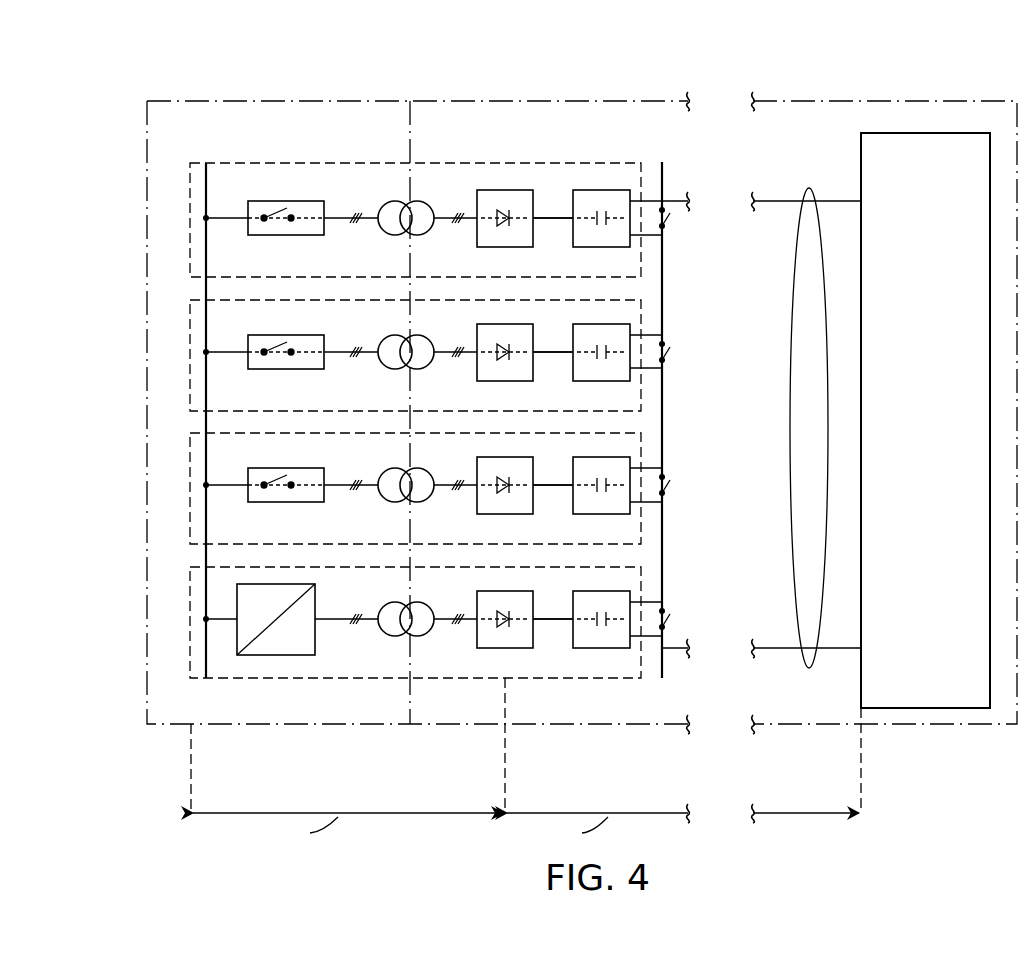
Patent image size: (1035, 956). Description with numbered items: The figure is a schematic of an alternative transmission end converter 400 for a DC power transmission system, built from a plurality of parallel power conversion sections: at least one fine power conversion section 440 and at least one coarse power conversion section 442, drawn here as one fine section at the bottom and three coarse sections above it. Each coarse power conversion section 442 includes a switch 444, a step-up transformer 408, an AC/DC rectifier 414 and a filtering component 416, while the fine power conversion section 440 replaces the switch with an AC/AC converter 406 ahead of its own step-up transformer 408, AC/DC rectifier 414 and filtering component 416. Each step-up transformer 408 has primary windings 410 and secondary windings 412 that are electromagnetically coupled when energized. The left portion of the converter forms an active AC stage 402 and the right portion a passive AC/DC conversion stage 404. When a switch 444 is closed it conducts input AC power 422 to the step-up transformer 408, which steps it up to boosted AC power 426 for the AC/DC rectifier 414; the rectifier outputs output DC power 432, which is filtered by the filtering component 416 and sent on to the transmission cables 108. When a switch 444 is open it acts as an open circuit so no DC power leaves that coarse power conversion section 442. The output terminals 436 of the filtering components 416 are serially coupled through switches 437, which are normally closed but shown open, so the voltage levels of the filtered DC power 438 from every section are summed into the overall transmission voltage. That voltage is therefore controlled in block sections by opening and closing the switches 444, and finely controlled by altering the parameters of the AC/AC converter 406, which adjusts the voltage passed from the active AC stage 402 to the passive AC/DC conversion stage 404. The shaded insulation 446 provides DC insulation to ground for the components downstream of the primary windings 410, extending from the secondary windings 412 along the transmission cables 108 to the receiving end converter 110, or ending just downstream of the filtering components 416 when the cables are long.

The transmission end converter 400 is at (710, 75).
The active AC stage 402 is at (401, 748).
The passive AC/DC conversion stage 404 is at (588, 748).
The AC/AC converter 406 is at (275, 656).
The step-up transformer 408 is at (382, 417).
The primary windings 410 is at (388, 230).
The secondary windings 412 is at (410, 237).
The AC/DC rectifier 414 is at (490, 190).
The filtering component 416 is at (598, 190).
The input AC power 422 is at (343, 213).
The boosted AC power 426 is at (440, 212).
The output DC power 432 is at (552, 212).
The output terminals 436 is at (646, 198).
The switches 437 is at (668, 220).
The filtered DC power 438 is at (658, 200).
The fine power conversion section 440 is at (188, 634).
The coarse power conversion section 442 is at (188, 233).
The switch 444 is at (268, 200).
The insulation 446 is at (533, 170).
The transmission cables 108 is at (810, 670).
The receiving end converter 110 is at (922, 133).